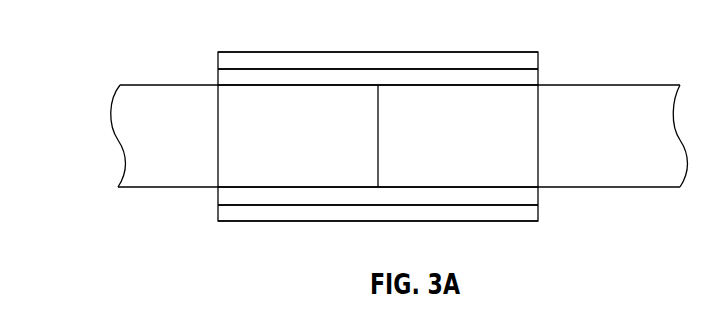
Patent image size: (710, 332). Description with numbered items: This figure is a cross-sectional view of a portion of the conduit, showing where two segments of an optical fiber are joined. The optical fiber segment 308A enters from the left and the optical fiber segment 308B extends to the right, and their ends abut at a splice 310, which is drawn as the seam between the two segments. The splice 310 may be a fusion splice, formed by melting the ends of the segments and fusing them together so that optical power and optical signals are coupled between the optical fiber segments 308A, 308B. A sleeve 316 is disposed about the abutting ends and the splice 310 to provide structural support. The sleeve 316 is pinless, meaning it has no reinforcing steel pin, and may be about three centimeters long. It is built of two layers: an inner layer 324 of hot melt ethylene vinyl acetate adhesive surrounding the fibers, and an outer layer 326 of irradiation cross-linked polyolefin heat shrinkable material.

The optical fiber segment 308A is at (148, 102).
The optical fiber segment 308B is at (655, 170).
The sleeve 316 is at (392, 48).
The outer layer 326 is at (538, 60).
The inner layer 324 is at (538, 80).
The splice 310 is at (377, 93).